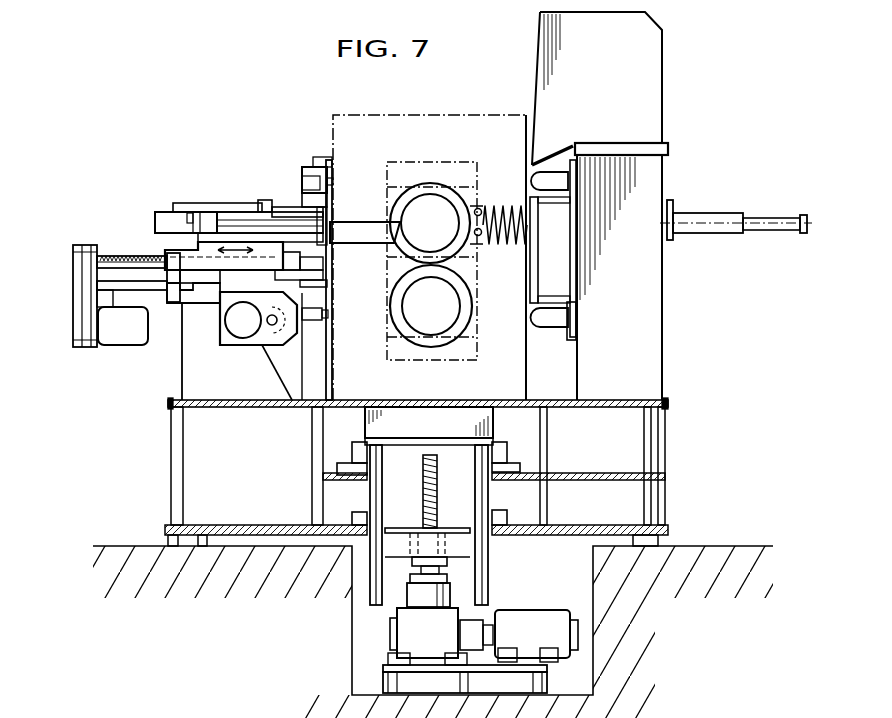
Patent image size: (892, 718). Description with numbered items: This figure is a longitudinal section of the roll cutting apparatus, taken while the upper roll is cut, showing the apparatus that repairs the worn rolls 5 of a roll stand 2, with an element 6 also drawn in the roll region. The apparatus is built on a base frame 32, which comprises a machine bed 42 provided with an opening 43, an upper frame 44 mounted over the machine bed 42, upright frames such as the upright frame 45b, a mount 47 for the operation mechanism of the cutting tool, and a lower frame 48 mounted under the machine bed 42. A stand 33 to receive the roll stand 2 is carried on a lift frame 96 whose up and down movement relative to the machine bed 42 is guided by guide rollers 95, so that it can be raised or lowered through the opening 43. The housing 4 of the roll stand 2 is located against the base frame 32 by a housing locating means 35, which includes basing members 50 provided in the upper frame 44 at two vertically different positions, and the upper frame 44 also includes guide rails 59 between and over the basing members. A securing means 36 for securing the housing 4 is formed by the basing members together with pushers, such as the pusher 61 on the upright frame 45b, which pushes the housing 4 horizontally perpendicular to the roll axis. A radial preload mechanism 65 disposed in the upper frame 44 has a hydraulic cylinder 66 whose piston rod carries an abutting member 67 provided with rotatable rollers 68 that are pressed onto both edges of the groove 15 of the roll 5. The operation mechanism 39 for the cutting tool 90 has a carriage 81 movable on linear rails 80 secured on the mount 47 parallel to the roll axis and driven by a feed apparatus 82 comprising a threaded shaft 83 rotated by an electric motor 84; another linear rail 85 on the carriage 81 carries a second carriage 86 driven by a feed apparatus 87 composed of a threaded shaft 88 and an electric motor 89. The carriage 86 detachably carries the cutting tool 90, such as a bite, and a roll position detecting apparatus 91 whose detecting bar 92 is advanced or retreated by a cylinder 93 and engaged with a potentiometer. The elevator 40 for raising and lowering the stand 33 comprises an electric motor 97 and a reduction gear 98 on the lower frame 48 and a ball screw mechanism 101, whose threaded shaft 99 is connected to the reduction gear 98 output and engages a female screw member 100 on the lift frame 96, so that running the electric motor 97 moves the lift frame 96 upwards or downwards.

The roll stand 2 is at (409, 113).
The housing 4 is at (423, 132).
The roll 5 is at (430, 185).
The roller axis 6 is at (458, 187).
The groove 15 is at (408, 200).
The base frame 32 is at (670, 371).
The stand 33 is at (500, 425).
The housing locating means 35 is at (565, 160).
The securing means 36 is at (317, 152).
The operation mechanism 39 is at (150, 207).
The elevator 40 is at (370, 618).
The machine bed 42 is at (667, 404).
The opening 43 is at (527, 414).
The upper frame 44 is at (662, 325).
The upright frame 45b is at (312, 168).
The mount 47 is at (243, 385).
The lower frame 48 is at (383, 677).
The basing member 50 is at (534, 182).
The guide rail 59 is at (538, 47).
The pusher 61 is at (318, 185).
The radial preload mechanism 65 is at (689, 202).
The hydraulic cylinder 66 is at (756, 212).
The abutting member 67 is at (482, 213).
The rotatable rollers 68 is at (482, 232).
The linear rail 80 is at (185, 290).
The carriage 81 is at (167, 253).
The feed apparatus 82 is at (215, 350).
The threaded shaft 83 is at (268, 325).
The electric motor 84 is at (232, 328).
The linear rail 85 is at (180, 256).
The carriage 86 is at (207, 250).
The feed apparatus 87 is at (67, 349).
The threaded shaft 88 is at (110, 253).
The electric motor 89 is at (110, 333).
The cutting tool 90 is at (368, 227).
The roll position detecting apparatus 91 is at (230, 202).
The detecting bar 92 is at (278, 207).
The cylinder 93 is at (194, 212).
The guide rollers 95 is at (366, 520).
The lift frame 96 is at (490, 490).
The electric motor 97 is at (530, 615).
The reduction gear 98 is at (405, 633).
The threaded shaft 99 is at (437, 500).
The female screw member 100 is at (438, 543).
The ball screw mechanism 101 is at (410, 527).